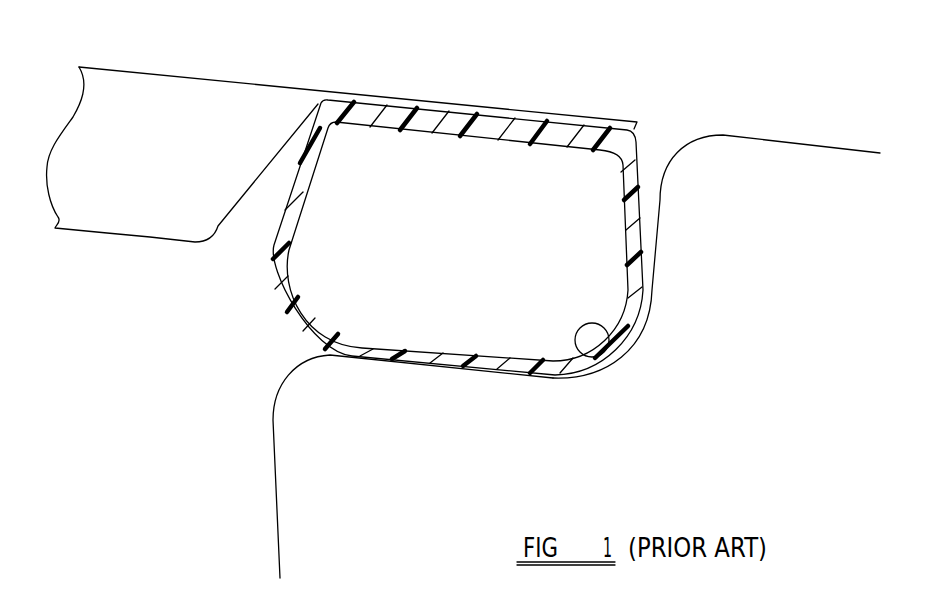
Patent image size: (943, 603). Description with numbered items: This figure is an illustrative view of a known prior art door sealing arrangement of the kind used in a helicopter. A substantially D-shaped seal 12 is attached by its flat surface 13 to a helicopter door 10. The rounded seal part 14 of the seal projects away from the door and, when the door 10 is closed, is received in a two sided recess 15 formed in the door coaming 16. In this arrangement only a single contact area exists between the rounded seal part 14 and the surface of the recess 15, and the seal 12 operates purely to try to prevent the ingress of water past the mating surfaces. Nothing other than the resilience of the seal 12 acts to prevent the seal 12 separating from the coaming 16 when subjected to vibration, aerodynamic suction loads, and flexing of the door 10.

The helicopter door 10 is at (213, 80).
The D shaped seal 12 is at (267, 297).
The flat surface 13 is at (467, 102).
The rounded seal part 14 is at (605, 353).
The two sided recess 15 is at (482, 373).
The door coaming 16 is at (815, 153).